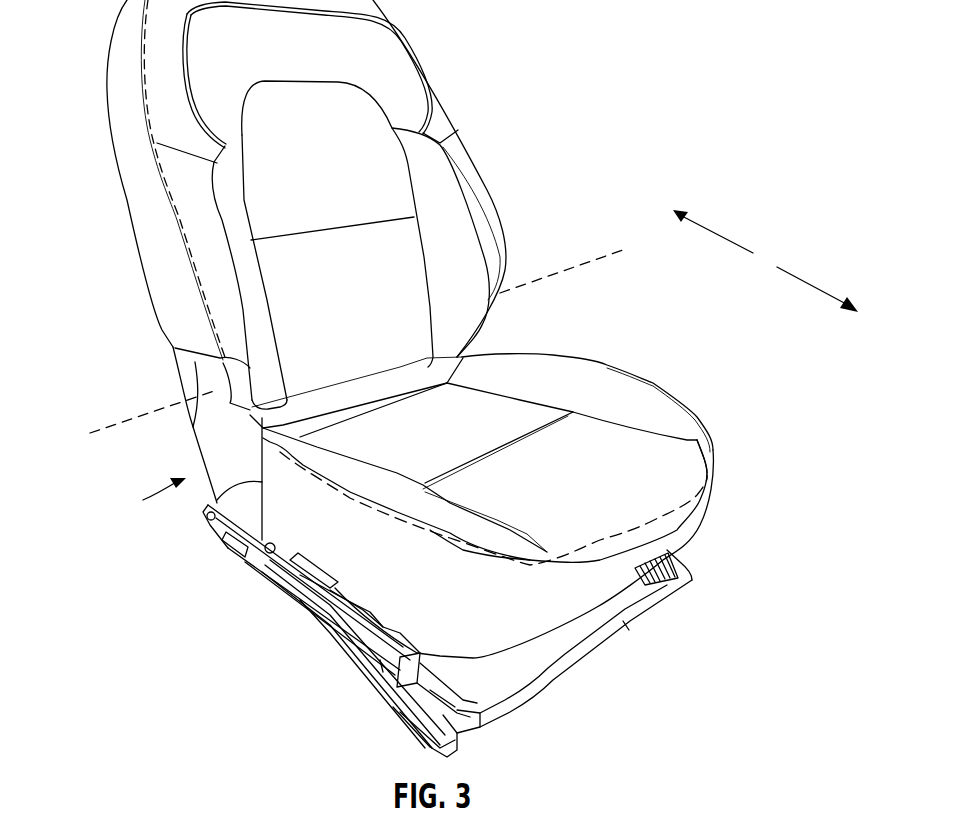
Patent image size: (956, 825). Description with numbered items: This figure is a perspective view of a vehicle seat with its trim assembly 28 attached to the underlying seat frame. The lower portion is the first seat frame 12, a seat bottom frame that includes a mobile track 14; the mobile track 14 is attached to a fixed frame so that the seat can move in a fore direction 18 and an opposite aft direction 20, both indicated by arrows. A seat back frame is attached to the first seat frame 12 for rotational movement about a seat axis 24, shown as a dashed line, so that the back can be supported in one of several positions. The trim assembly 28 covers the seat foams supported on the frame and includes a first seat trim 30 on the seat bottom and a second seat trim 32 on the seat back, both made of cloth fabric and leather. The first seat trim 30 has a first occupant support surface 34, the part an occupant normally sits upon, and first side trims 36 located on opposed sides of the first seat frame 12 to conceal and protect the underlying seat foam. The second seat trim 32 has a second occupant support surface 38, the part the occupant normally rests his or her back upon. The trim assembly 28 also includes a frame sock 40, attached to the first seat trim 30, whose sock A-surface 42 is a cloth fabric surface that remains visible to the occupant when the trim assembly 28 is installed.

The first seat frame 12 is at (285, 583).
The mobile track 14 is at (387, 690).
The fore direction 18 is at (813, 284).
The aft direction 20 is at (712, 229).
The seat axis 24 is at (583, 260).
The trim assembly 28 is at (122, 303).
The first seat trim 30 is at (625, 382).
The second seat trim 32 is at (418, 77).
The first occupant support surface 34 is at (470, 448).
The first side trims 36 is at (707, 428).
The second occupant support surface 38 is at (345, 190).
The frame sock 40 is at (145, 499).
The sock A-surface 42 is at (230, 480).